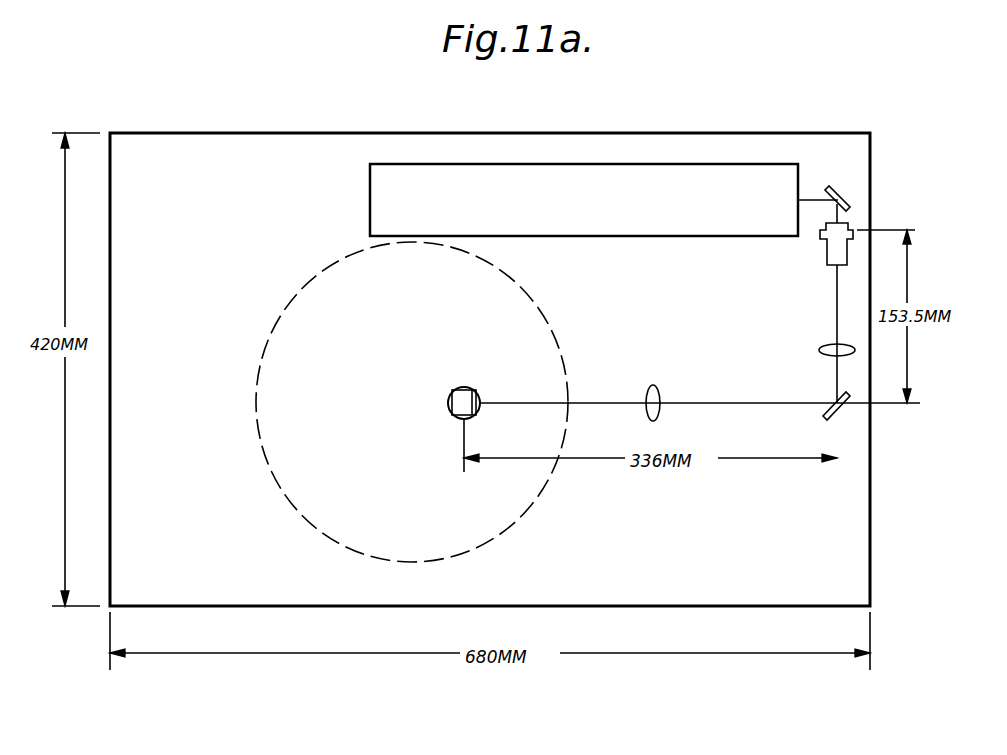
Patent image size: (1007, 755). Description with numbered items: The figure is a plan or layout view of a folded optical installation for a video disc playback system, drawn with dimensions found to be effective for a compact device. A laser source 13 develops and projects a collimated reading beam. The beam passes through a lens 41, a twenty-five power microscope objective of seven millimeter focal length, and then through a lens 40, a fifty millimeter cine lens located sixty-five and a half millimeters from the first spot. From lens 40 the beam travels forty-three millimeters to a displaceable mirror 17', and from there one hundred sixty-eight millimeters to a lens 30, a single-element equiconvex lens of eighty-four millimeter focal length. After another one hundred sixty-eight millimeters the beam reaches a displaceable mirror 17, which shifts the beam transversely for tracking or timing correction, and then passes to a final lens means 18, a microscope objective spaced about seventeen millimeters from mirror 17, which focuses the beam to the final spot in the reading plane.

The laser source 13 is at (598, 226).
The mirror 17 is at (472, 377).
The final lens means 18 is at (450, 397).
The mirror 17' is at (844, 423).
The lens 30 is at (660, 396).
The lens 40 is at (830, 347).
The lens 41 is at (824, 242).